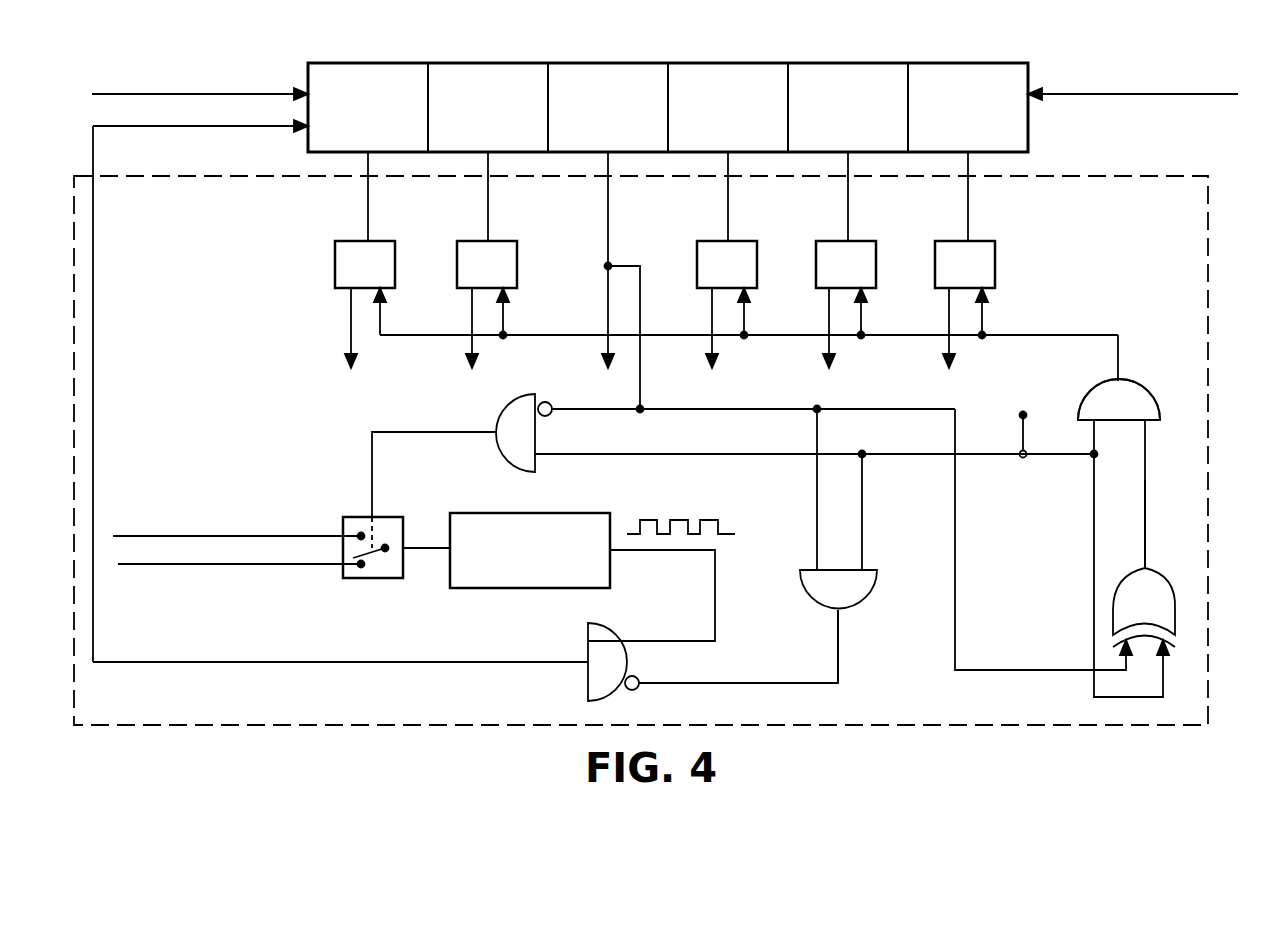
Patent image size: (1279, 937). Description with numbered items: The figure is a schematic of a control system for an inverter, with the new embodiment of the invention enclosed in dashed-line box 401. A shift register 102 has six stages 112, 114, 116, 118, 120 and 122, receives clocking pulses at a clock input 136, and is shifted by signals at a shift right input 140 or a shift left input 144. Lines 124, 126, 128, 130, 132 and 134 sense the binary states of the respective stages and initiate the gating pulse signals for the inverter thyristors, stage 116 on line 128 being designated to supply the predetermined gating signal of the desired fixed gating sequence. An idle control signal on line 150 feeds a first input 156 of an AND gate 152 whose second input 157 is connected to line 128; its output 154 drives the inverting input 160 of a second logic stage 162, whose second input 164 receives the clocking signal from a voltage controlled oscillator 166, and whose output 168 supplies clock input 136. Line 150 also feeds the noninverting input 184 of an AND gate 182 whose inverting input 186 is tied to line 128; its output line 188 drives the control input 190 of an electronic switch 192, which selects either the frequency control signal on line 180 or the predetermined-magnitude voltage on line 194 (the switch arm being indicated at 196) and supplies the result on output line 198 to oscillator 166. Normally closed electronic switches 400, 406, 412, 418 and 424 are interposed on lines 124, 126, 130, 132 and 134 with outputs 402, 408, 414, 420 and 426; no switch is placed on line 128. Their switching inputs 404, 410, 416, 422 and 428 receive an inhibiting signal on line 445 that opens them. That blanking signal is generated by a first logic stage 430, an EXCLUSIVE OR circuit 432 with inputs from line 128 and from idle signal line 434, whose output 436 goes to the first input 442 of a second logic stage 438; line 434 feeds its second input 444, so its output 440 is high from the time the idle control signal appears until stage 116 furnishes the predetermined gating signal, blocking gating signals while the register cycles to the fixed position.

The shift register 102 is at (1015, 53).
The shift register stage 112 is at (370, 63).
The shift register stage 114 is at (490, 63).
The shift register stage 116 is at (610, 63).
The shift register stage 118 is at (730, 63).
The shift register stage 120 is at (850, 63).
The shift register stage 122 is at (965, 63).
The gating pulse signal line 124 is at (368, 209).
The gating pulse signal line 126 is at (488, 210).
The gating pulse signal line 128 is at (618, 210).
The gating pulse signal line 130 is at (734, 211).
The gating pulse signal line 132 is at (854, 211).
The gating pulse signal line 134 is at (978, 210).
The clock input 136 is at (128, 126).
The shift right input 140 is at (225, 94).
The shift left input 144 is at (1129, 94).
The idle control signal line 150 is at (1026, 412).
The AND gate 152 is at (808, 595).
The output line 154 is at (838, 648).
The first input 156 is at (863, 512).
The second input 157 is at (817, 476).
The inverting input 160 is at (648, 683).
The second logic stage 162 is at (598, 633).
The second input 164 is at (714, 616).
The voltage controlled oscillator 166 is at (520, 506).
The output 168 is at (268, 662).
The frequency control signal line 180 is at (240, 534).
The AND gate 182 is at (498, 412).
The noninverting input 184 is at (552, 452).
The inverting input 186 is at (568, 394).
The output line 188 is at (400, 430).
The control input 190 is at (372, 479).
The electronic switch 192 is at (386, 516).
The line 194 is at (124, 560).
The switch arm 196 is at (336, 559).
The output line 198 is at (428, 544).
The electronic switch 400 is at (395, 258).
The output 402 is at (358, 359).
The switching input 404 is at (383, 323).
The electronic switch 406 is at (517, 252).
The output 408 is at (480, 359).
The switching input 410 is at (506, 320).
The electronic switch 412 is at (757, 258).
The output 414 is at (718, 359).
The switching input 416 is at (748, 320).
The electronic switch 418 is at (876, 256).
The output 420 is at (836, 359).
The switching input 422 is at (865, 320).
The electronic switch 424 is at (995, 258).
The output 426 is at (956, 359).
The switching input 428 is at (986, 320).
The first logic stage 430 is at (1169, 524).
The EXCLUSIVE OR circuit 432 is at (1112, 603).
The idle signal line 434 is at (1084, 694).
The output 436 is at (1146, 508).
The second logic stage 438 is at (1152, 390).
The output line 440 is at (1118, 363).
The first input 442 is at (1148, 424).
The second input 444 is at (1092, 426).
The inhibiting signal line 445 is at (1118, 335).
The dashed-line box 401 is at (960, 725).